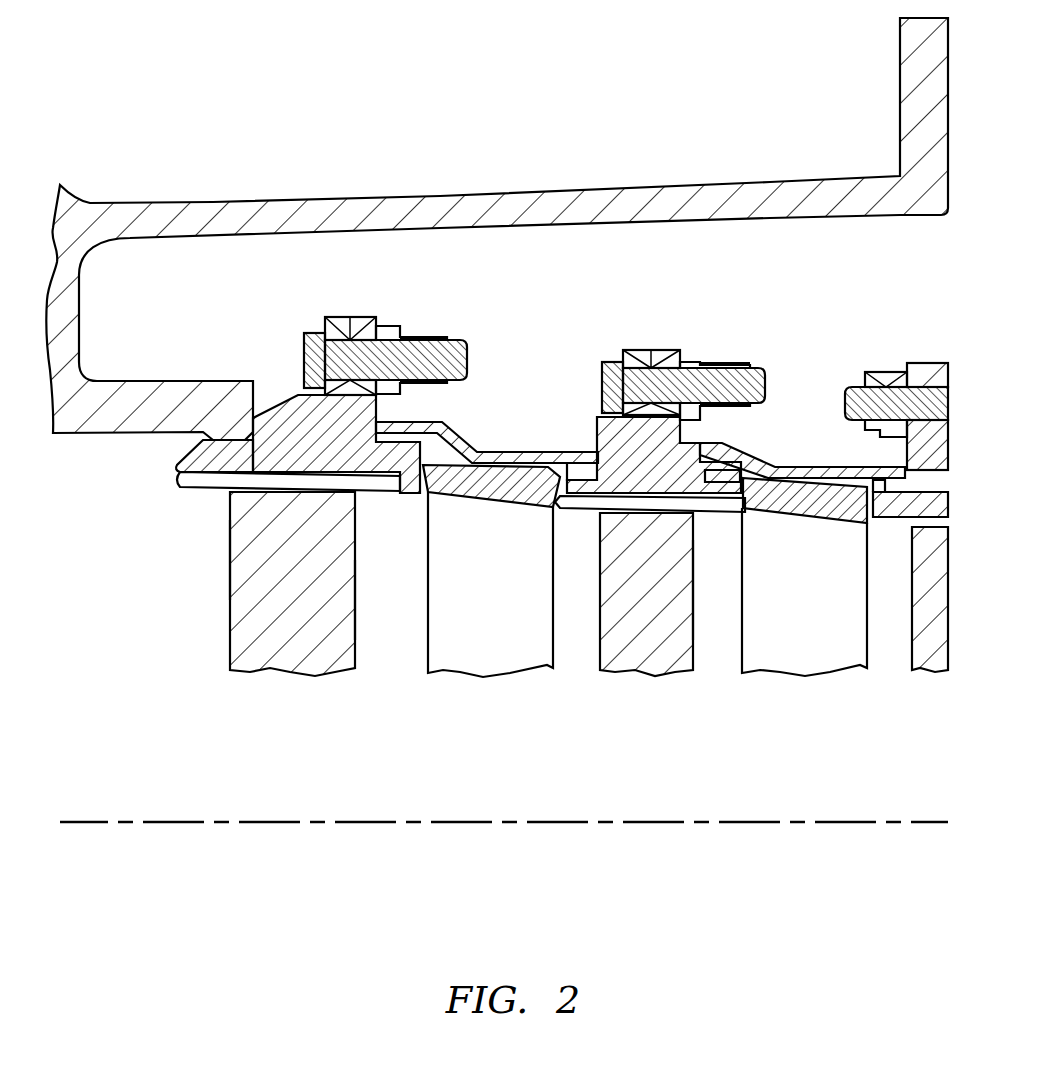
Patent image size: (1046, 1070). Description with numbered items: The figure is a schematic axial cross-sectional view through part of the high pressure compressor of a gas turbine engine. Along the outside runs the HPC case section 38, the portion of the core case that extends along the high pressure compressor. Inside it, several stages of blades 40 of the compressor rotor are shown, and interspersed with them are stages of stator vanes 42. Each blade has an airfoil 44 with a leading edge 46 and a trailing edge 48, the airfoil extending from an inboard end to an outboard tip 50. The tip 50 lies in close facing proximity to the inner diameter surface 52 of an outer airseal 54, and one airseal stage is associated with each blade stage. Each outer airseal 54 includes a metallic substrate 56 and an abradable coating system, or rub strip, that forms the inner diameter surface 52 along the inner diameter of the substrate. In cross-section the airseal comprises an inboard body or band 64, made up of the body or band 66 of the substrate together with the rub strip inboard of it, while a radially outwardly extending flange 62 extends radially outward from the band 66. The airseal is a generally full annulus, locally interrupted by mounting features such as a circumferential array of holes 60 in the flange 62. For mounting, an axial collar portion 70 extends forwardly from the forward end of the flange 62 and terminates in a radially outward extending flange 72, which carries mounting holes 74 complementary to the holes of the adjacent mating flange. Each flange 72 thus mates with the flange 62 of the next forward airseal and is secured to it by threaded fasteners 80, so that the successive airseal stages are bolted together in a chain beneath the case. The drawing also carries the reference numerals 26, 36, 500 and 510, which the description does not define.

The second vane 26 is at (630, 611).
The gap between vane platforms 36 is at (695, 587).
The HPC case section 38 is at (452, 206).
The blades 40 is at (572, 624).
The stator vanes 42 is at (466, 593).
The airfoil 44 is at (318, 653).
The leading edge 46 is at (230, 555).
The trailing edge 48 is at (357, 612).
The outboard tip 50 is at (283, 490).
The inner diameter surface 52 is at (655, 510).
The outer airseal 54 is at (683, 333).
The metallic substrate 56 is at (633, 440).
The holes 60 is at (650, 378).
The radially outwardly extending flange 62 is at (340, 318).
The inboard body or band 64 is at (680, 478).
The body or band of the substrate 66 is at (714, 477).
The axial collar portion 70 is at (511, 456).
The radially outward extending flange 72 is at (367, 327).
The mounting holes 74 is at (405, 331).
The fasteners 80 is at (327, 358).
The engine centerline axis 500 is at (746, 820).
The gas flow path 510 is at (149, 539).